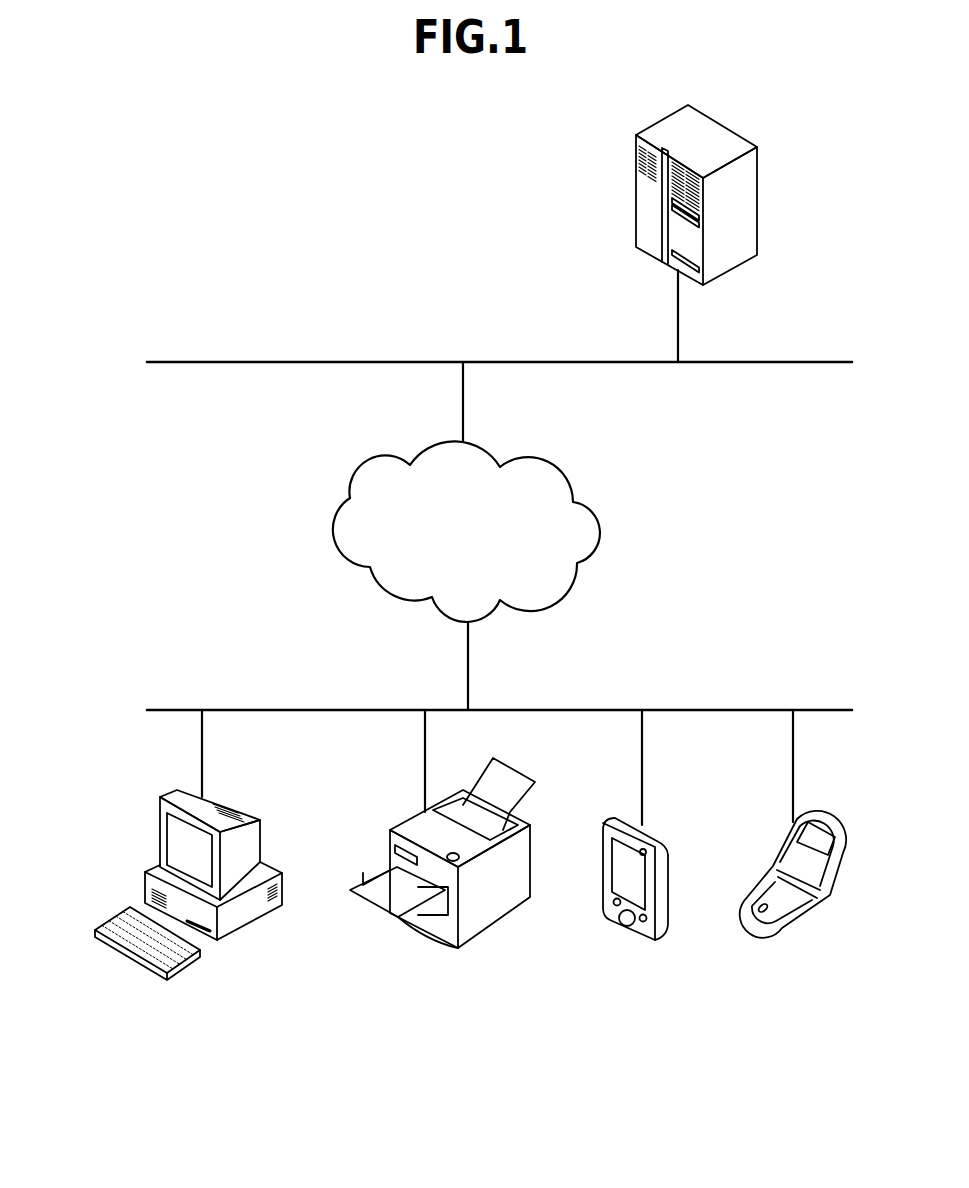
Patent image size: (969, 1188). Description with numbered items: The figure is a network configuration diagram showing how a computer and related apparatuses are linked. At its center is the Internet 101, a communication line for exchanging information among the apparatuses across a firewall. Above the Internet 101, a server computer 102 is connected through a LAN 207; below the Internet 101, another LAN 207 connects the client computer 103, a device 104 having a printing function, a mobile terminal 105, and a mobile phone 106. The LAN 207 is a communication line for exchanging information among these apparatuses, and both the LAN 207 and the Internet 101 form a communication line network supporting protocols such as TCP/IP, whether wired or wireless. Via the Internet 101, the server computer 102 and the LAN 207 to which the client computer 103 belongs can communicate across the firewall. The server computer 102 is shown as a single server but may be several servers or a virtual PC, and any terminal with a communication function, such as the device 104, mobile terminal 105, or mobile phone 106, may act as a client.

The Internet 101 is at (600, 520).
The server computer 102 is at (635, 200).
The client computer 103 is at (142, 970).
The device having a printing function 104 is at (425, 940).
The mobile terminal 105 is at (625, 937).
The mobile phone 106 is at (758, 940).
The LAN 207 is at (283, 360).